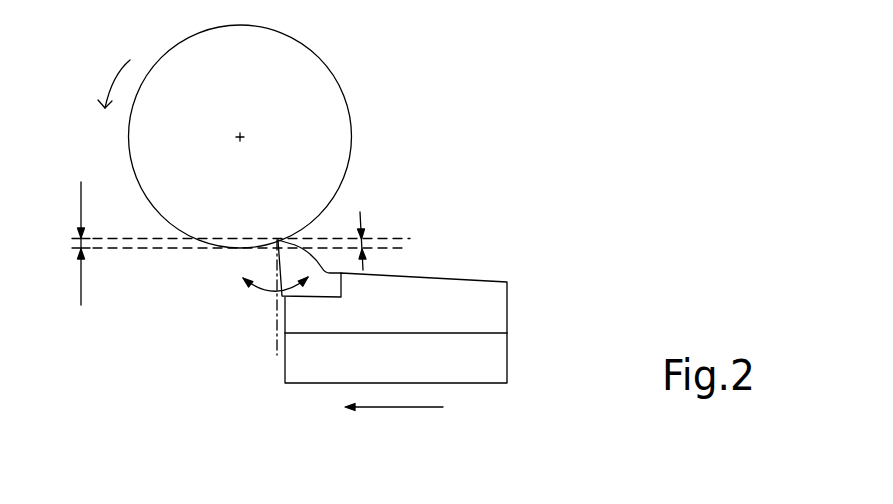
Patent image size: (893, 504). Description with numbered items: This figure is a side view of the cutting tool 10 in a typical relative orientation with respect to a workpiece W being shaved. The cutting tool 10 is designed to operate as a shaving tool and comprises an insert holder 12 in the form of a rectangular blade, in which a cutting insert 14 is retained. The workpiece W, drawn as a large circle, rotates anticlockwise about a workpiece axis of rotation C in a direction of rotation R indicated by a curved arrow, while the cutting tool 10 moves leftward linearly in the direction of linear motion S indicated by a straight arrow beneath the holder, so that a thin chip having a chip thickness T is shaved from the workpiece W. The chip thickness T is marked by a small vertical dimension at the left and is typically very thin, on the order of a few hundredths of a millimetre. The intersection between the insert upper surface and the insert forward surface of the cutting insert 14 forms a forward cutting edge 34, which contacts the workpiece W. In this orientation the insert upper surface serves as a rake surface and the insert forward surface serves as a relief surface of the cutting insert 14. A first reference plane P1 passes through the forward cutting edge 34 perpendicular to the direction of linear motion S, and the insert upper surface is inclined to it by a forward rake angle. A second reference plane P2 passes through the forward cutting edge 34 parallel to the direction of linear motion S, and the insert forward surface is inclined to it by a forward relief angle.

The cutting tool 10 is at (481, 227).
The insert holder 12 is at (444, 306).
The cutting insert 14 is at (306, 266).
The forward cutting edge 34 is at (280, 238).
The workpiece W is at (323, 80).
The workpiece axis of rotation C is at (238, 140).
The direction of rotation R is at (113, 76).
The chip thickness T is at (70, 243).
The first reference plane P1 is at (276, 328).
The second reference plane P2 is at (402, 240).
The direction of linear motion S is at (394, 422).